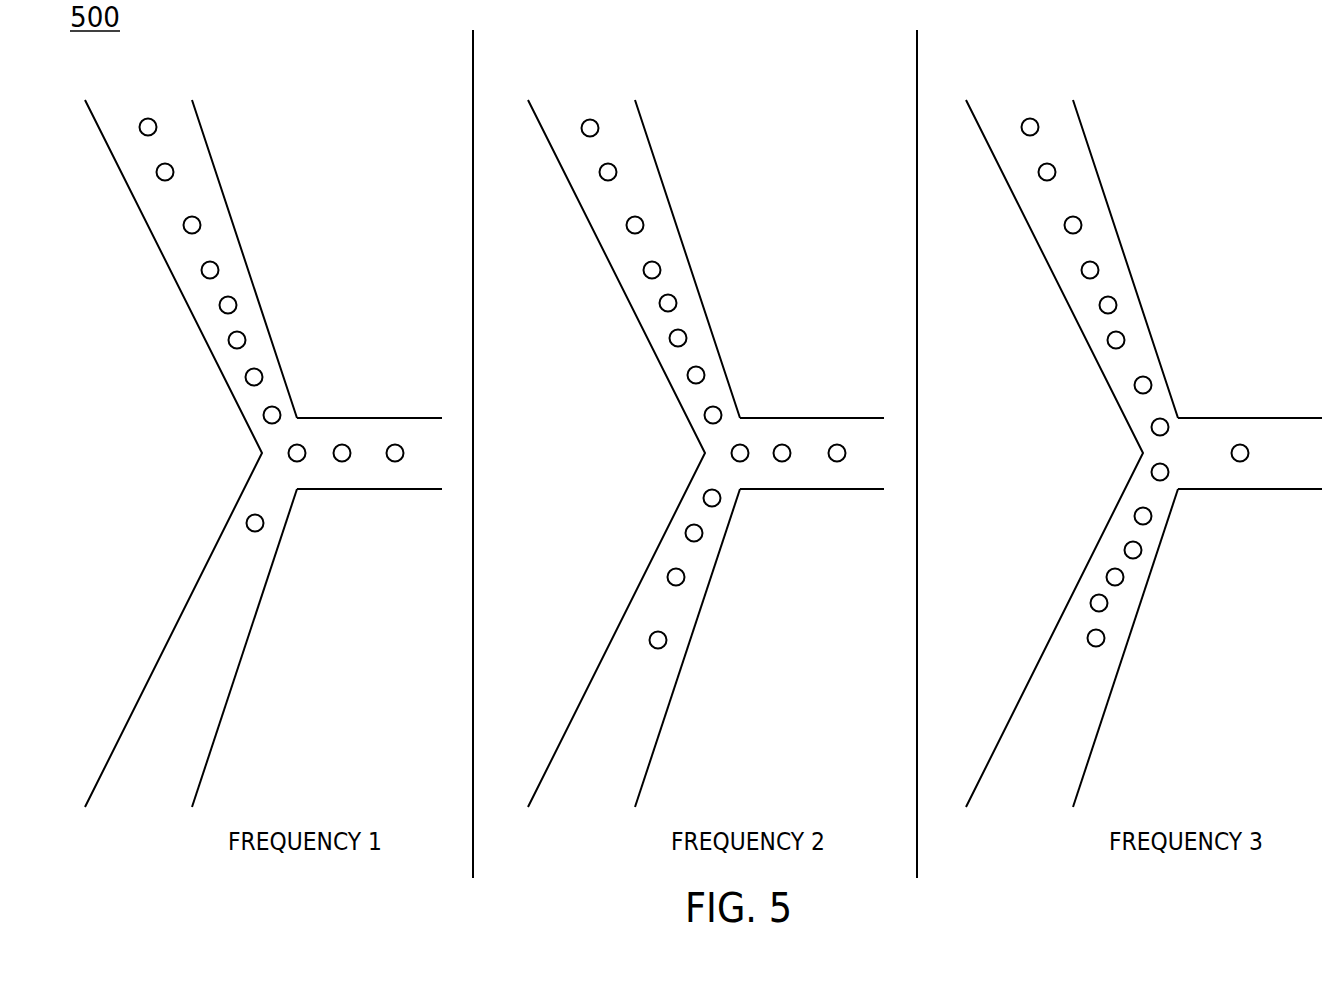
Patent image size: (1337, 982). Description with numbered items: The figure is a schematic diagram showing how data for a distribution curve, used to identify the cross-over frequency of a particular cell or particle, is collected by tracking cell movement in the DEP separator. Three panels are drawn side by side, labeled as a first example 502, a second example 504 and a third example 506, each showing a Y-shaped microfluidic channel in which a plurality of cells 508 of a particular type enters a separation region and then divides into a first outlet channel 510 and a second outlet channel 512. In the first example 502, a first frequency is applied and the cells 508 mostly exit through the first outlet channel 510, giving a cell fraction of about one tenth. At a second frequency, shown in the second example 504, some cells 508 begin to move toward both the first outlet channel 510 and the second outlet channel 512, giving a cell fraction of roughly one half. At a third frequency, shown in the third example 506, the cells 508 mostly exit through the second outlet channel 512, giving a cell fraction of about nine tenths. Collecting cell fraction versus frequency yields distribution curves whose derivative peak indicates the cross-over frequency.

The first example 502 is at (347, 98).
The second frequency configuration 504 is at (790, 98).
The third frequency configuration 506 is at (1228, 98).
The cells 508 is at (157, 125).
The first outlet channel 510 is at (337, 417).
The second outlet channel 512 is at (265, 595).